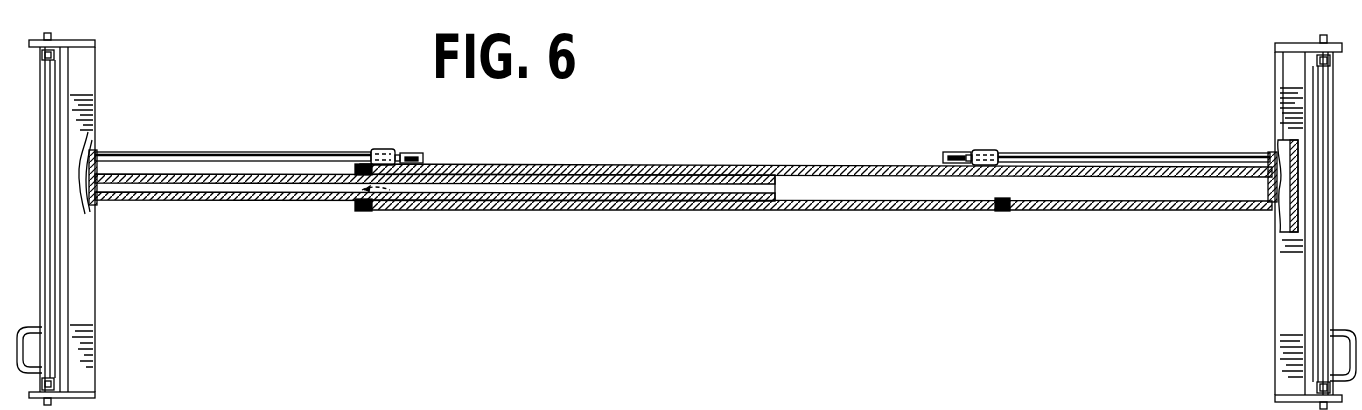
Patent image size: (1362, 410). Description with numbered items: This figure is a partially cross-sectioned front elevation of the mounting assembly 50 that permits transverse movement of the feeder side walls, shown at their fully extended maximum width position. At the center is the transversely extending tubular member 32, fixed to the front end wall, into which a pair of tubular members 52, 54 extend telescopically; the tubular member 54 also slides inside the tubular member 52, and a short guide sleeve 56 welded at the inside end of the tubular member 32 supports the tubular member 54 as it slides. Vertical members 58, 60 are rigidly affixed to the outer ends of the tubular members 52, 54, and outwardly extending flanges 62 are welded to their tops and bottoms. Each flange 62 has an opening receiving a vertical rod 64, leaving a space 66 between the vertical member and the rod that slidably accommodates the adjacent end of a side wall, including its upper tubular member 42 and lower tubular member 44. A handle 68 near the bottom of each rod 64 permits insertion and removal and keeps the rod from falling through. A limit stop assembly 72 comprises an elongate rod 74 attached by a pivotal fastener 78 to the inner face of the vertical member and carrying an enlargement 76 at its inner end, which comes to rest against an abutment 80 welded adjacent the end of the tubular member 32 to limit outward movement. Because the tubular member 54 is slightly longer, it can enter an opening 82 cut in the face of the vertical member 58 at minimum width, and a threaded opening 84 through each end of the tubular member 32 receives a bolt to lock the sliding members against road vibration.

The tubular member 32 is at (810, 164).
The upper tubular member 42 is at (62, 63).
The lower tubular member 44 is at (62, 384).
The mounting assembly 50 is at (655, 166).
The tubular member 52 is at (1085, 209).
The tubular member 54 is at (255, 201).
The guide sleeve 56 is at (362, 202).
The vertical member 58 is at (1283, 73).
The vertical member 60 is at (88, 134).
The flange 62 is at (74, 41).
The vertical rod 64 is at (50, 244).
The space 66 is at (62, 92).
The handle 68 is at (25, 327).
The limit stop assembly 72 is at (372, 147).
The rod 74 is at (240, 152).
The enlargement 76 is at (420, 153).
The pivotal fastener 78 is at (95, 154).
The abutment 80 is at (396, 150).
The opening 82 is at (1270, 192).
The threaded opening 84 is at (385, 192).